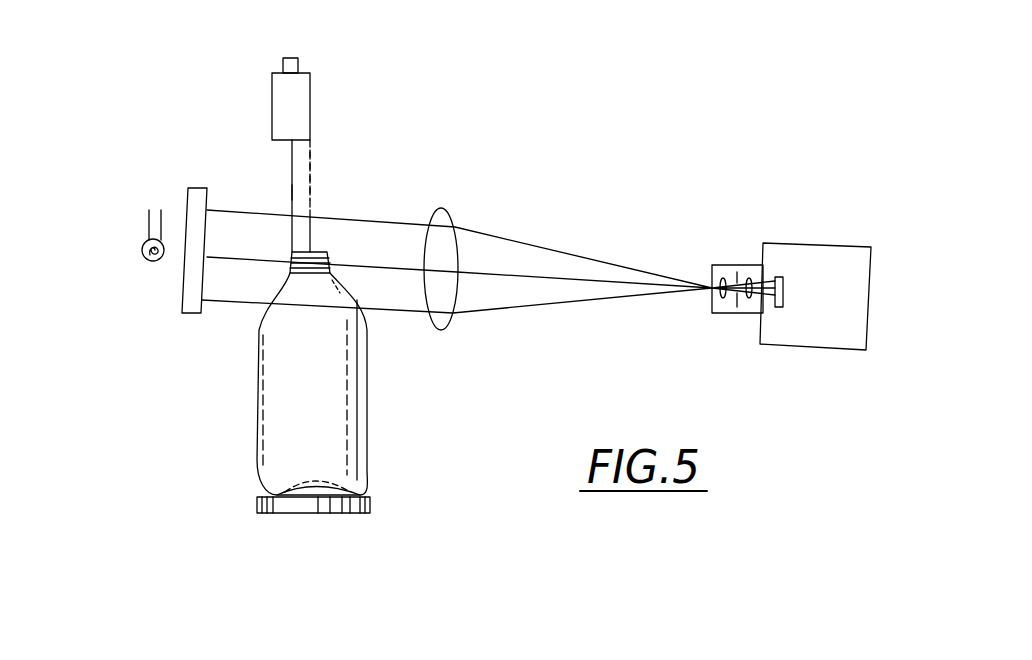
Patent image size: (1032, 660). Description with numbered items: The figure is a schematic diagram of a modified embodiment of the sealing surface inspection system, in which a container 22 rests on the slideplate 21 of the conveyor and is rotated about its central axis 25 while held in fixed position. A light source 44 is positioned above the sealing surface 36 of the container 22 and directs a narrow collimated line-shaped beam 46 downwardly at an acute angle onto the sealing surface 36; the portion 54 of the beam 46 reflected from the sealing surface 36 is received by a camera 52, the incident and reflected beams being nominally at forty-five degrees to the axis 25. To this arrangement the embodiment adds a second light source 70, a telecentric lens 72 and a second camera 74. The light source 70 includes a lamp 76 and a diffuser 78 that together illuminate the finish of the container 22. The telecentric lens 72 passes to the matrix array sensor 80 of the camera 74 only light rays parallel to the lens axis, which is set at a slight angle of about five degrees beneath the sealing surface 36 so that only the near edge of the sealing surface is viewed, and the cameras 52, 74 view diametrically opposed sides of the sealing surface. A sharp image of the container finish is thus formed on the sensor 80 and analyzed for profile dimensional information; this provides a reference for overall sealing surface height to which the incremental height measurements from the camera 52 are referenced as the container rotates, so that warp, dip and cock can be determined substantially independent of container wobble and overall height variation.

The light source 70 is at (177, 178).
The diffuser 78 is at (191, 315).
The lamp 76 is at (142, 245).
The telecentric lens 72 is at (457, 221).
The camera 74 is at (825, 242).
The matrix array sensor 80 is at (780, 308).
The light source 44 is at (298, 63).
The camera 52 is at (310, 98).
The collimated beam 46 is at (292, 163).
The reflected beam portion 54 is at (292, 192).
The central axis 25 is at (310, 176).
The sealing surface 36 is at (327, 252).
The container 22 is at (372, 412).
The slideplate 21 is at (370, 503).